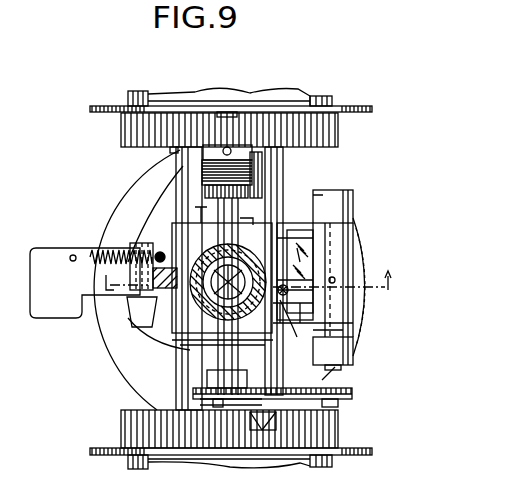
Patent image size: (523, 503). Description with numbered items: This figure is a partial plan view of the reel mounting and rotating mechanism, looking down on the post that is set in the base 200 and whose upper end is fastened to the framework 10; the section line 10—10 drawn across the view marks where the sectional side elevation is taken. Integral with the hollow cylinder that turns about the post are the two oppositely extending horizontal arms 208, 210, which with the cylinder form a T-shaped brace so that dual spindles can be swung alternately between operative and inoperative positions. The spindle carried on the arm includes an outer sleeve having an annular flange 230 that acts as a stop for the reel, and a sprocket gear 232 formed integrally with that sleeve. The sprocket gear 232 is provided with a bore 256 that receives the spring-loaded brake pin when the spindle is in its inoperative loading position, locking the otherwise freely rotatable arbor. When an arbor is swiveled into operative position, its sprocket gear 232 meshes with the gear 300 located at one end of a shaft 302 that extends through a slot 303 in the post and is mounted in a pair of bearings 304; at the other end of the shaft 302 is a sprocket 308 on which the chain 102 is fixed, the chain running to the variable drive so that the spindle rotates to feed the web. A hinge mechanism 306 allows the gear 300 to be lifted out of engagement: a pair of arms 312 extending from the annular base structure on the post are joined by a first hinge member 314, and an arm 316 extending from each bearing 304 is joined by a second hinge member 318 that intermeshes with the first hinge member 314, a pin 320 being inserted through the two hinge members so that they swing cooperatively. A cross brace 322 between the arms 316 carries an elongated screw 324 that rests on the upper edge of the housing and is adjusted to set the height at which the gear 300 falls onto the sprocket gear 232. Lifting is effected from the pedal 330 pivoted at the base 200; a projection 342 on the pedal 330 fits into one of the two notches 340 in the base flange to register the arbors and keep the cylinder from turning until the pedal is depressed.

The framework 10 is at (249, 284).
The chain 102 is at (348, 398).
The base 200 is at (142, 193).
The horizontal arm 208 is at (186, 380).
The horizontal arm 210 is at (305, 163).
The annular flange 230 is at (366, 110).
The sprocket gear 232 is at (336, 140).
The bore 256 is at (259, 430).
The gear 300 is at (226, 110).
The shaft 302 is at (224, 272).
The slot 303 is at (230, 276).
The bearings 304 is at (298, 188).
The hinge mechanism 306 is at (359, 350).
The sprocket 308 is at (196, 392).
The arms 312 is at (310, 258).
The first hinge member 314 is at (340, 262).
The arm 316 is at (322, 174).
The second hinge member 318 is at (352, 213).
The stop 320 is at (342, 371).
The cross brace 322 is at (307, 343).
The elongated screw 324 is at (290, 296).
The pedal 330 is at (35, 256).
The notches 340 is at (88, 250).
The projection 342 is at (145, 315).